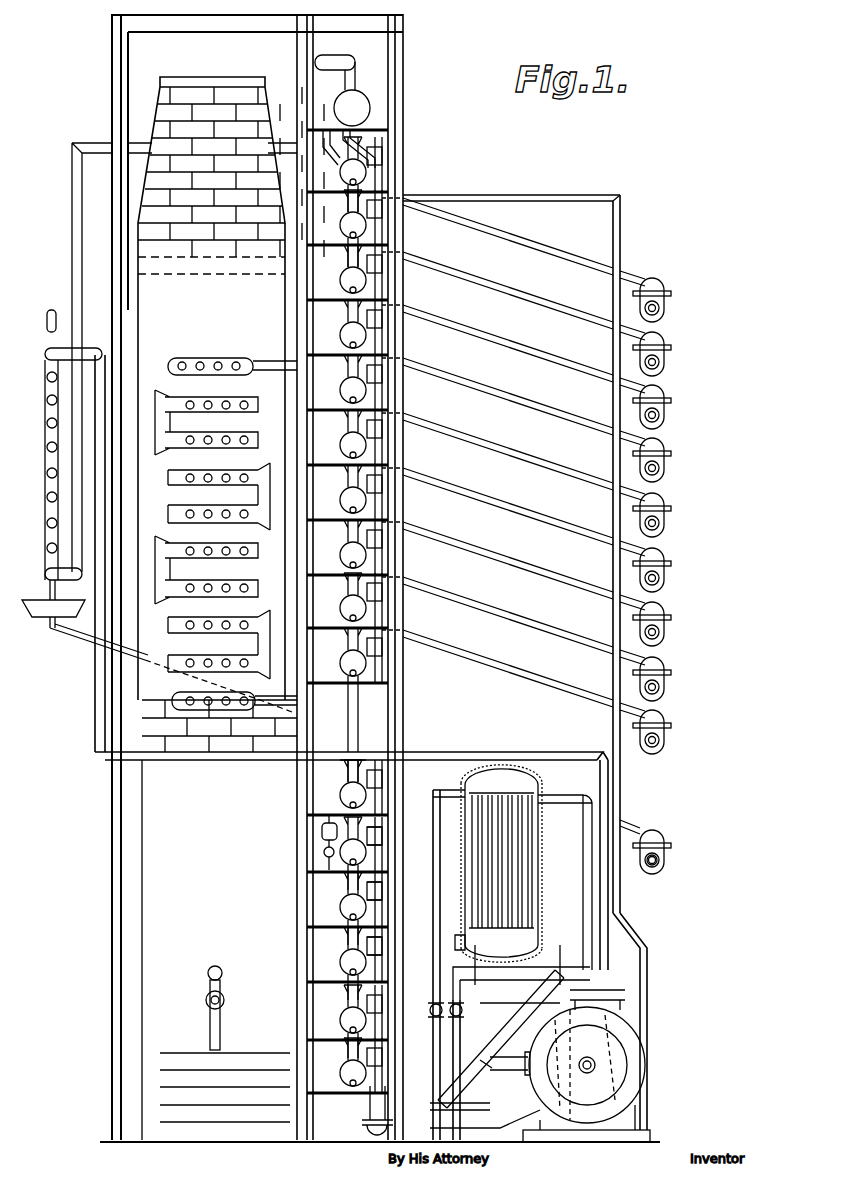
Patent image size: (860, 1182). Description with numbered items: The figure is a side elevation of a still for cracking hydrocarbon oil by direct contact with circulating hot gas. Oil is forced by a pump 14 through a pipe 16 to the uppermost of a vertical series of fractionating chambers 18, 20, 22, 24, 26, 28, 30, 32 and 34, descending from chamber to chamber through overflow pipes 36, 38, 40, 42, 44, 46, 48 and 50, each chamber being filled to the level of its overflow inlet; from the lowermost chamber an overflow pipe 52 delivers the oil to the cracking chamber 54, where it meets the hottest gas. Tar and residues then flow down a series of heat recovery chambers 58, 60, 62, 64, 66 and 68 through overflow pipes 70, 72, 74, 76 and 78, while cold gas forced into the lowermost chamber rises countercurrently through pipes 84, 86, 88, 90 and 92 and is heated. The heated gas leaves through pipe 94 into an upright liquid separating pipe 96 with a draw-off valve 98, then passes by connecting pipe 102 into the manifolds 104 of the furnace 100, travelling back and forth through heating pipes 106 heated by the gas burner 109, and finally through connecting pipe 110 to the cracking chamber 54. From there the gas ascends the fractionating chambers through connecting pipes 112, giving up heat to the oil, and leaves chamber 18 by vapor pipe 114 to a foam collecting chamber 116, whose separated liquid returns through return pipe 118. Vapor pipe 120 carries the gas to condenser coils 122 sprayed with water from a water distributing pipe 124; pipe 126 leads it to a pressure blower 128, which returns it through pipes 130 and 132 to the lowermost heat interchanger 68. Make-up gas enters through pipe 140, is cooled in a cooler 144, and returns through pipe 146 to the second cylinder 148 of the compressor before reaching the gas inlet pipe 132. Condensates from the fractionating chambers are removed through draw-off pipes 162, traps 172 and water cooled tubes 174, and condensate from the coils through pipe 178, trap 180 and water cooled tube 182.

The pump 14 is at (555, 1000).
The pipe 16 is at (622, 222).
The fractionating chamber 18 is at (340, 172).
The fractionating chamber 20 is at (340, 226).
The fractionating chamber 22 is at (340, 281).
The fractionating chamber 24 is at (340, 336).
The fractionating chamber 26 is at (345, 403).
The fractionating chamber 28 is at (366, 445).
The fractionating chamber 30 is at (366, 500).
The fractionating chamber 32 is at (366, 555).
The fractionating chamber 34 is at (366, 608).
The overflow pipe 36 is at (390, 232).
The overflow pipe 38 is at (395, 282).
The overflow pipe 40 is at (395, 337).
The overflow pipe 42 is at (395, 390).
The overflow pipe 44 is at (400, 420).
The overflow pipe 46 is at (400, 475).
The overflow pipe 48 is at (400, 529).
The overflow pipe 50 is at (400, 584).
The overflow pipe 52 is at (400, 640).
The cracking chamber 54 is at (366, 670).
The heat recovery chamber 58 is at (340, 793).
The heat recovery chamber 60 is at (345, 860).
The heat recovery chamber 62 is at (340, 910).
The heat recovery chamber 64 is at (340, 965).
The heat recovery chamber 66 is at (340, 1022).
The heat recovery chamber 68 is at (340, 1075).
The overflow pipe 70 is at (384, 838).
The overflow pipe 72 is at (384, 893).
The overflow pipe 74 is at (384, 948).
The overflow pipe 76 is at (384, 990).
The overflow pipe 78 is at (384, 1062).
The gas pipe 84 is at (348, 1050).
The gas pipe 86 is at (348, 997).
The gas pipe 88 is at (348, 940).
The gas pipe 90 is at (348, 890).
The gas pipe 92 is at (322, 832).
The pipe 94 is at (362, 783).
The liquid separating pipe 96 is at (297, 393).
The draw-off valve 98 is at (322, 855).
The furnace 100 is at (160, 832).
The connecting pipe 102 is at (270, 361).
The manifold 104 is at (200, 358).
The heating pipe 106 is at (210, 372).
The gas burner 109 is at (222, 973).
The connecting pipe 110 is at (270, 692).
The connecting pipe 112 is at (348, 205).
The vapor pipe 114 is at (372, 158).
The foam collecting chamber 116 is at (362, 96).
The return pipe 118 is at (360, 150).
The vapor pipe 120 is at (335, 62).
The condenser coils 122 is at (45, 445).
The water distributing pipe 124 is at (48, 330).
The pipe 126 is at (95, 690).
The pressure blower 128 is at (637, 1055).
The pipe 130 is at (510, 1070).
The gas inlet pipe 132 is at (470, 1090).
The pipe 140 is at (583, 880).
The cooler 144 is at (538, 850).
The pipe 146 is at (470, 987).
The second cylinder 148 is at (592, 973).
The draw-off pipe 162 is at (495, 310).
The trap 172 is at (660, 308).
The water cooled tube 174 is at (660, 292).
The pipe 178 is at (632, 825).
The trap 180 is at (660, 838).
The water cooled tube 182 is at (660, 862).